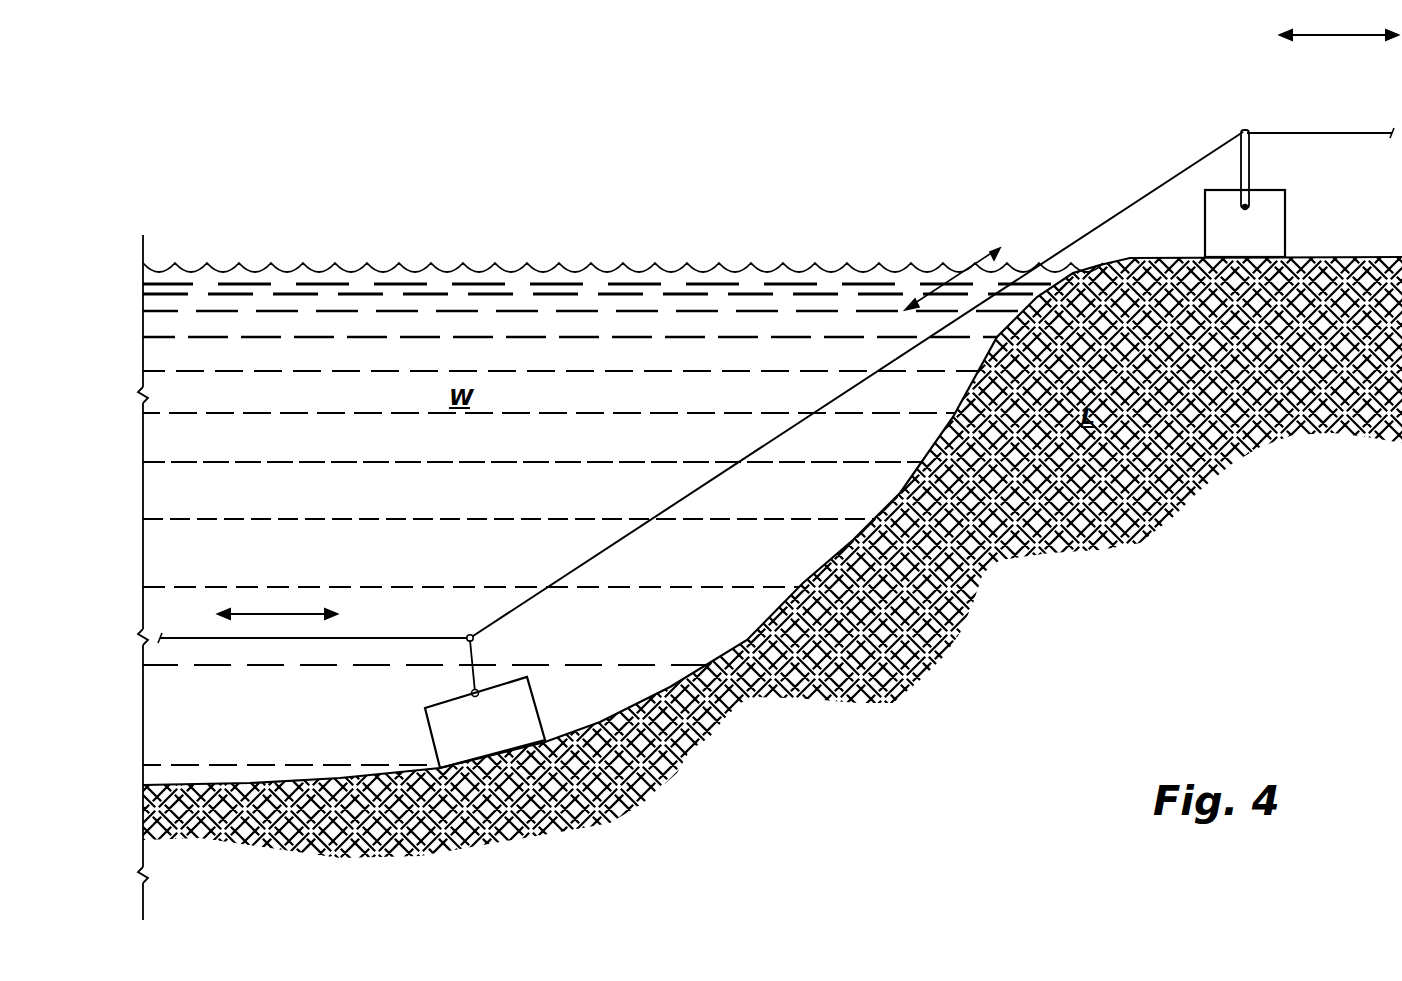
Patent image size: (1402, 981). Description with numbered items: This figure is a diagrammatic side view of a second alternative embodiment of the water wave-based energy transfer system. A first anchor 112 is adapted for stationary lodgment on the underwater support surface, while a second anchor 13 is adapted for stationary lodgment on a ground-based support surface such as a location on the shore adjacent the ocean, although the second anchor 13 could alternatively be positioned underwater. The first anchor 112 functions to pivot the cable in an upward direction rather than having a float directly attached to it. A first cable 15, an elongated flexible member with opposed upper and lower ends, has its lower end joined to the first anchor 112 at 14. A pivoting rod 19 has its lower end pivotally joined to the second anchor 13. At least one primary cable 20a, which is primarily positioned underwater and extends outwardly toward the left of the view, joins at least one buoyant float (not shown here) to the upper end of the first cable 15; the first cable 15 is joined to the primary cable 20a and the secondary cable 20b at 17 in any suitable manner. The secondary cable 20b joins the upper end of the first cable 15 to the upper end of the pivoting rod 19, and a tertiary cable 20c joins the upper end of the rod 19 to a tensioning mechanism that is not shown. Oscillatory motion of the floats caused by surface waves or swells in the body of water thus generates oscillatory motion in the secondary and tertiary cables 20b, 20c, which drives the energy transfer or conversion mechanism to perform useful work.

The second anchor 13 is at (1205, 200).
The joint of first cable to first anchor 14 is at (471, 692).
The first cable 15 is at (478, 673).
The joint of first cable to primary and secondary cables 17 is at (469, 635).
The pivoting rod 19 is at (1251, 144).
The primary cable 20a is at (270, 640).
The secondary cable 20b is at (779, 434).
The tertiary cable 20c is at (1320, 130).
The first anchor 112 is at (432, 745).